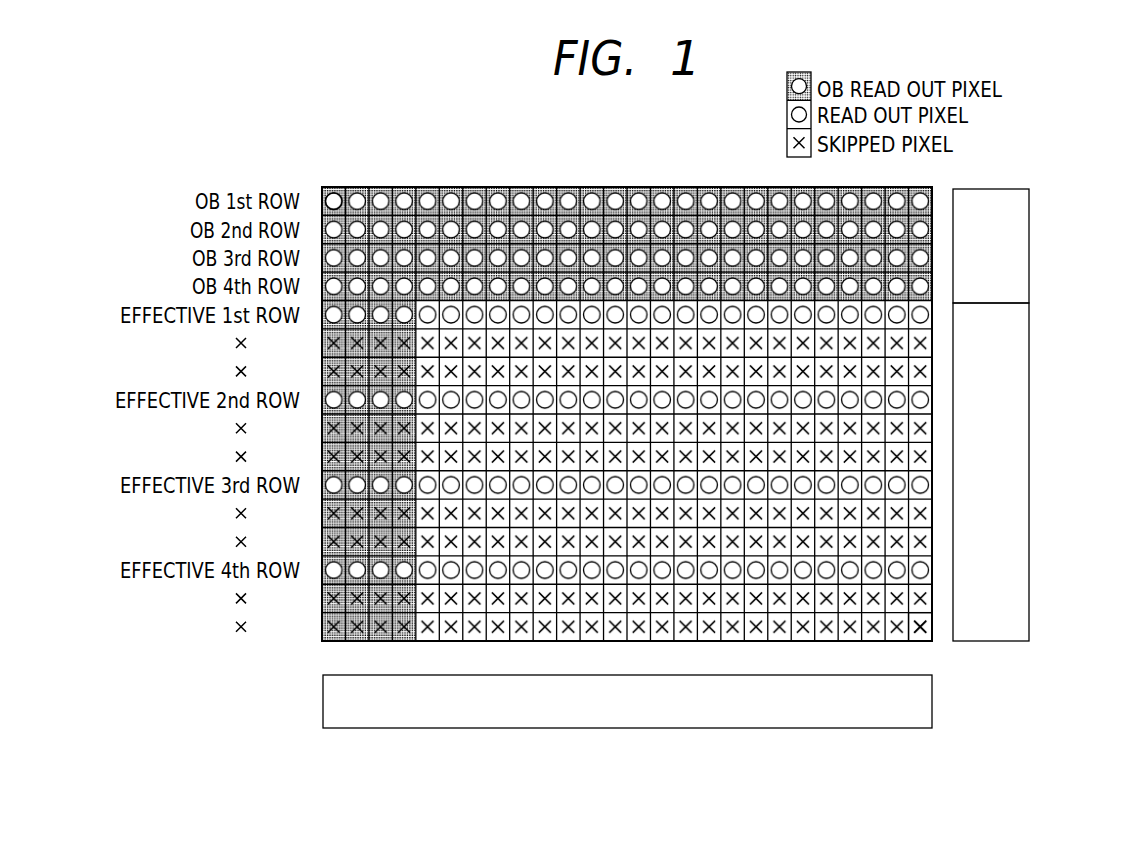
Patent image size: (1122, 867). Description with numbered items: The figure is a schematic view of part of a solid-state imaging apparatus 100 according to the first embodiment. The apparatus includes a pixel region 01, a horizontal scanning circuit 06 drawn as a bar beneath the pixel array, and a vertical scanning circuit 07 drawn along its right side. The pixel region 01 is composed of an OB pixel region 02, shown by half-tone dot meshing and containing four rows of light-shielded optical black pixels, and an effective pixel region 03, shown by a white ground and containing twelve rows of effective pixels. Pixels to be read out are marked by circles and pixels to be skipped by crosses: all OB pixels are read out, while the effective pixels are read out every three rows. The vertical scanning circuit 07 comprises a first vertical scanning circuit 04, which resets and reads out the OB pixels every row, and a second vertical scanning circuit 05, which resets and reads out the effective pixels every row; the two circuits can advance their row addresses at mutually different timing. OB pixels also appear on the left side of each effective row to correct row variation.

The pixel region 01 is at (357, 193).
The OB pixel region 02 is at (470, 198).
The effective pixel region 03 is at (920, 618).
The vertical scanning circuit 1 04 is at (1003, 192).
The vertical scanning circuit 2 05 is at (1050, 640).
The horizontal scanning circuit 06 is at (407, 730).
The vertical scanning circuit 07 is at (1035, 384).
The solid-state imaging apparatus 100 is at (717, 479).